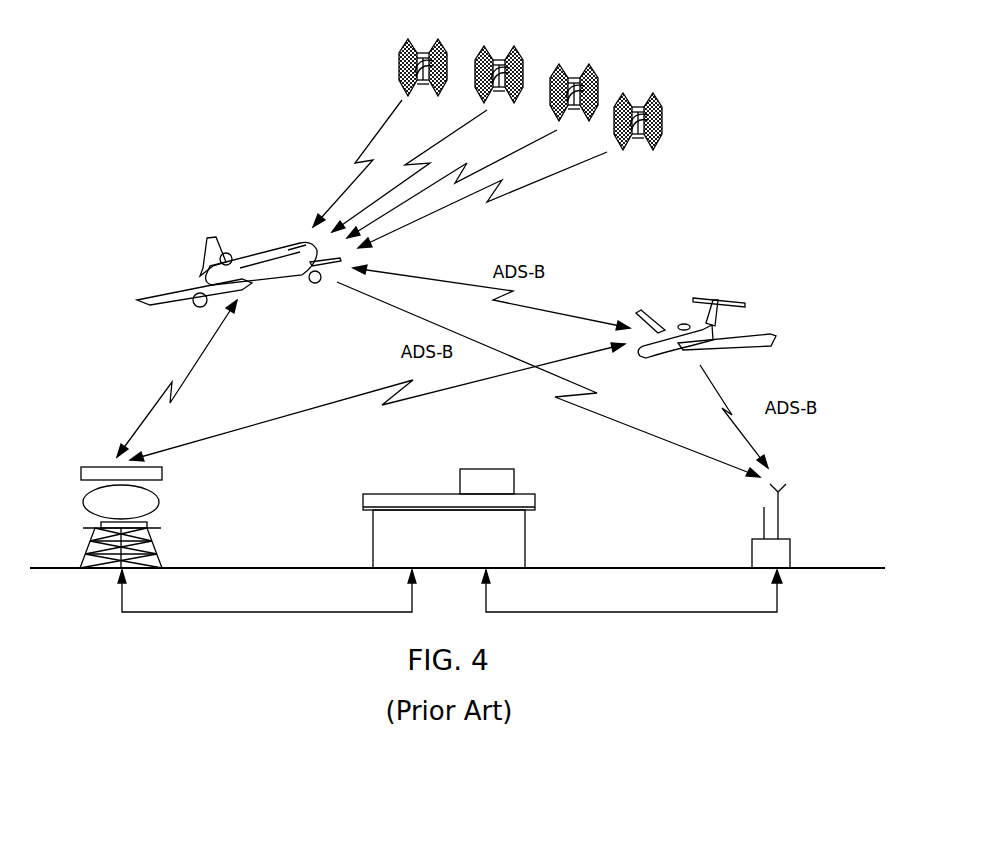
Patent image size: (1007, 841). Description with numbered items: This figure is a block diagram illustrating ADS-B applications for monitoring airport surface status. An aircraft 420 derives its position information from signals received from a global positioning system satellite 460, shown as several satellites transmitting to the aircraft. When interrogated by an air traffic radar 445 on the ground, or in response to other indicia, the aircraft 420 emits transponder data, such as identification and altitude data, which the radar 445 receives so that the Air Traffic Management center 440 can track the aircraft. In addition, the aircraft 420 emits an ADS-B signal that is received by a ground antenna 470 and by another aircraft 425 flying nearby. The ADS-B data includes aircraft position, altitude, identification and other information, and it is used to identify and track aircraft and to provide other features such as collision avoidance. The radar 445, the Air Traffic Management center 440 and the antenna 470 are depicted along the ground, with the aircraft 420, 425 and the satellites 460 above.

The aircraft 420 is at (272, 237).
The other aircraft 425 is at (662, 323).
The Air Traffic Management center 440 is at (537, 494).
The air traffic radar 445 is at (85, 500).
The global positioning system satellite 460 is at (663, 135).
The antenna 470 is at (791, 535).